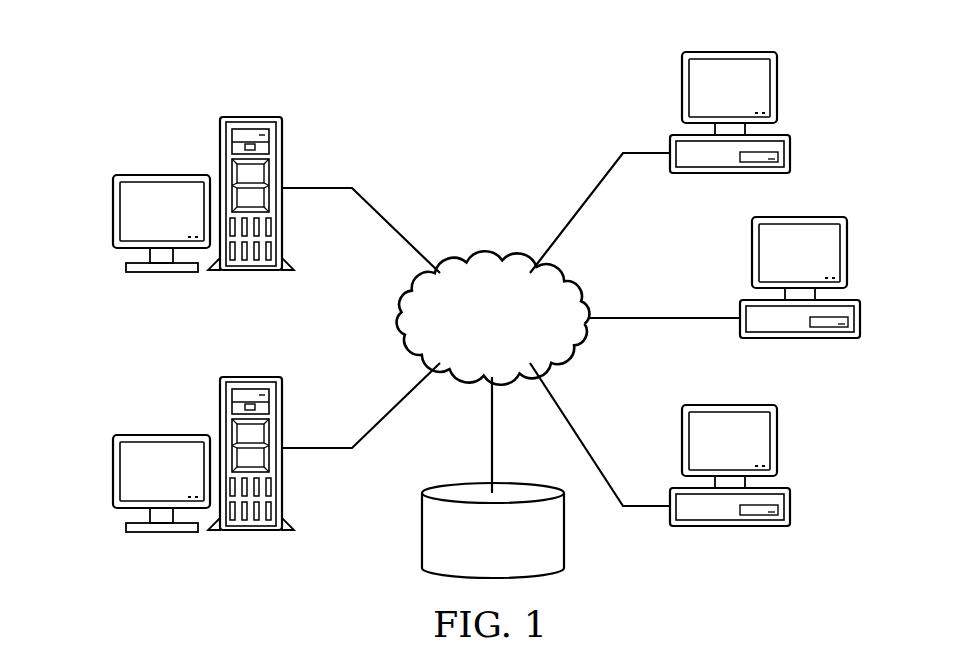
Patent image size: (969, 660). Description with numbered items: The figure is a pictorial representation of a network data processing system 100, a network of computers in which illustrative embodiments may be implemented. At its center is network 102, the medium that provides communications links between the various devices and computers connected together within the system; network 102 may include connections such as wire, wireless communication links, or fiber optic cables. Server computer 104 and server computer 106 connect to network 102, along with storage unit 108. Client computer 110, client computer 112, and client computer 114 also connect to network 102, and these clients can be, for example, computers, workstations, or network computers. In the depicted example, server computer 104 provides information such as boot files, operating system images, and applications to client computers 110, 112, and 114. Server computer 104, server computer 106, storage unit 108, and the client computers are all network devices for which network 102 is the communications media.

The network data processing system 100 is at (358, 98).
The network 102 is at (462, 266).
The server computer 104 is at (113, 212).
The server computer 106 is at (113, 470).
The storage unit 108 is at (422, 530).
The client computer 110 is at (790, 143).
The client computer 112 is at (860, 325).
The client computer 114 is at (790, 515).